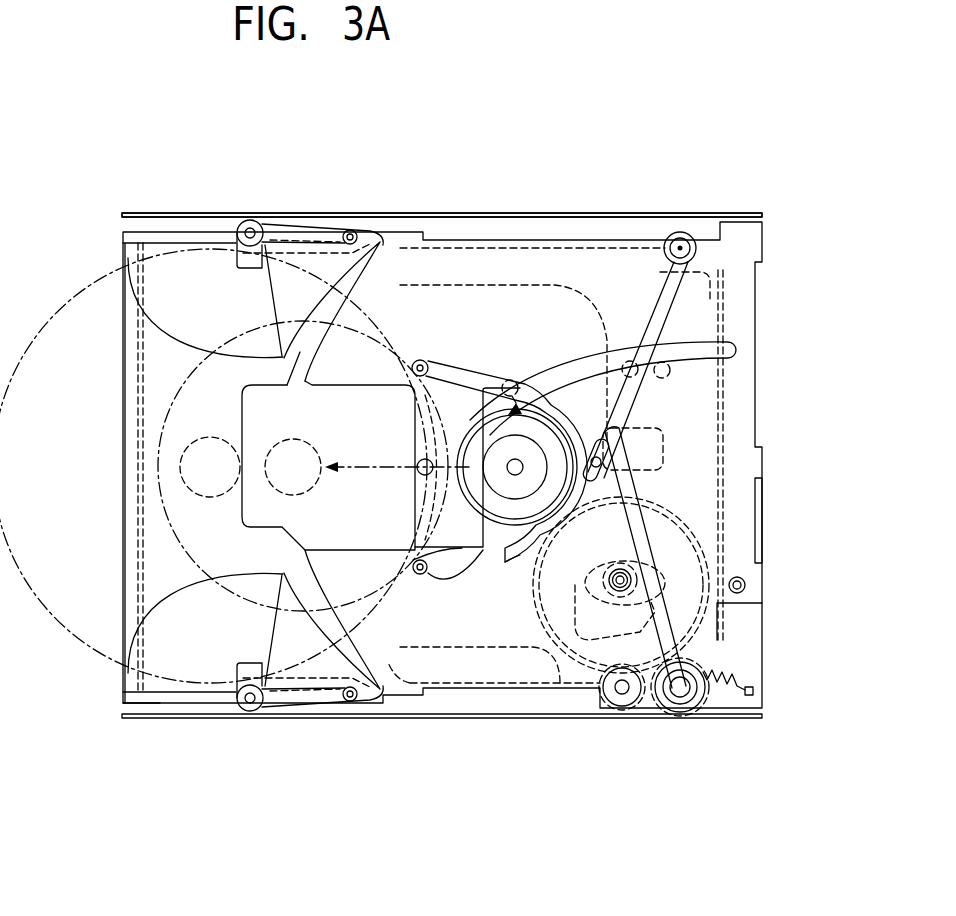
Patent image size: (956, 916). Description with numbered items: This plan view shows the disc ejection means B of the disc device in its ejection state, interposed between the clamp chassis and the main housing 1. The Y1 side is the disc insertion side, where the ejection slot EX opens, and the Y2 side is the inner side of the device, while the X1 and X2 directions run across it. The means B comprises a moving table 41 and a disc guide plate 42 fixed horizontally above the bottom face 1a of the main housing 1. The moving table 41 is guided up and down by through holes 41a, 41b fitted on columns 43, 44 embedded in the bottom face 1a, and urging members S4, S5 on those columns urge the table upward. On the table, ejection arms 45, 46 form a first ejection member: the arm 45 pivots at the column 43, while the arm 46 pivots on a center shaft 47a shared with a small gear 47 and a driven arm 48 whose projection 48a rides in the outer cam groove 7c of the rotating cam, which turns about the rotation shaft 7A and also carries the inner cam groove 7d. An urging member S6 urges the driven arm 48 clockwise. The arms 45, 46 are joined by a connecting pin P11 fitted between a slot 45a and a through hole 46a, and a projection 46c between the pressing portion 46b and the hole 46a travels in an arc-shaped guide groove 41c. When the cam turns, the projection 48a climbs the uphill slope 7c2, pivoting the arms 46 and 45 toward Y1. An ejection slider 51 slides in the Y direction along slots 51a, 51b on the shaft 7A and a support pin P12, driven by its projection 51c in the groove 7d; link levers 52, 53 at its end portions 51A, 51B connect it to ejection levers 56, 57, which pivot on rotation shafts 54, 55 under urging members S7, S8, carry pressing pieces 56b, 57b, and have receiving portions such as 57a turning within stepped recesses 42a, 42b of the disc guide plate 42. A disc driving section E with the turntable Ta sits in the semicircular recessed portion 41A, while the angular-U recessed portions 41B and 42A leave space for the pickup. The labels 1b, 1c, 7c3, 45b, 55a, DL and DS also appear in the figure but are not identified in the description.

The main housing 1 is at (433, 206).
The bottom face 1a is at (150, 704).
The bottom plate 1b is at (136, 720).
The top plate 1c is at (153, 212).
The rotation shaft 7A is at (620, 574).
The cam groove 7c is at (666, 522).
The uphill slope 7c2 is at (585, 668).
The cam groove portion 7c3 is at (700, 656).
The cam groove 7d is at (600, 583).
The moving table 41 is at (738, 310).
The recessed portion 41A is at (418, 434).
The recessed portion 41B is at (371, 543).
The through hole 41a is at (667, 240).
The through hole 41b is at (748, 585).
The arc-shaped guide groove 41c is at (560, 365).
The disc guide plate 42 is at (122, 523).
The recessed portion 42A is at (250, 408).
The stepped recess 42a is at (217, 577).
The stepped recess 42b is at (168, 330).
The column 43 is at (681, 232).
The column 44 is at (752, 595).
The ejection arm 45 is at (475, 575).
The slot 45a is at (645, 453).
The link pivot 45b is at (421, 585).
The ejection arm 46 is at (468, 376).
The through hole 46a is at (545, 548).
The pressing portion 46b is at (421, 364).
The projection 46c is at (509, 381).
The small gear 47 is at (700, 700).
The center shaft 47a is at (678, 700).
The driven arm 48 is at (660, 712).
The projection 48a is at (630, 718).
The ejection slider 51 is at (485, 262).
The leading end portion 51A is at (405, 695).
The leading end portion 51B is at (397, 230).
The slot 51a is at (594, 600).
The slot 51b is at (661, 378).
The projection 51c is at (748, 563).
The link lever 52 is at (340, 704).
The link lever 53 is at (348, 230).
The rotation shaft 54 is at (254, 712).
The rotation shaft 55 is at (250, 220).
The lower guide arm 55a is at (342, 640).
The ejection lever 56 is at (278, 628).
The pressing piece 56b is at (296, 712).
The ejection lever 57 is at (274, 292).
The receiving portion 57a is at (342, 293).
The pressing piece 57b is at (301, 228).
The disc ejection means B is at (480, 730).
The large disc outline DL is at (47, 590).
The small disc outline DS is at (301, 466).
The disc driving section E is at (398, 415).
The ejection slot EX is at (107, 449).
The connecting pin P11 is at (596, 452).
The support pin P12 is at (628, 362).
The urging member S4 is at (706, 234).
The urging member S5 is at (758, 648).
The urging member S6 is at (754, 692).
The urging member S7 is at (236, 706).
The urging member S8 is at (233, 228).
The turntable Ta is at (480, 506).
The X1-side X1 is at (541, 145).
The X2-side X2 is at (541, 157).
The Y1-side Y1 is at (580, 103).
The Y2-side Y2 is at (591, 104).